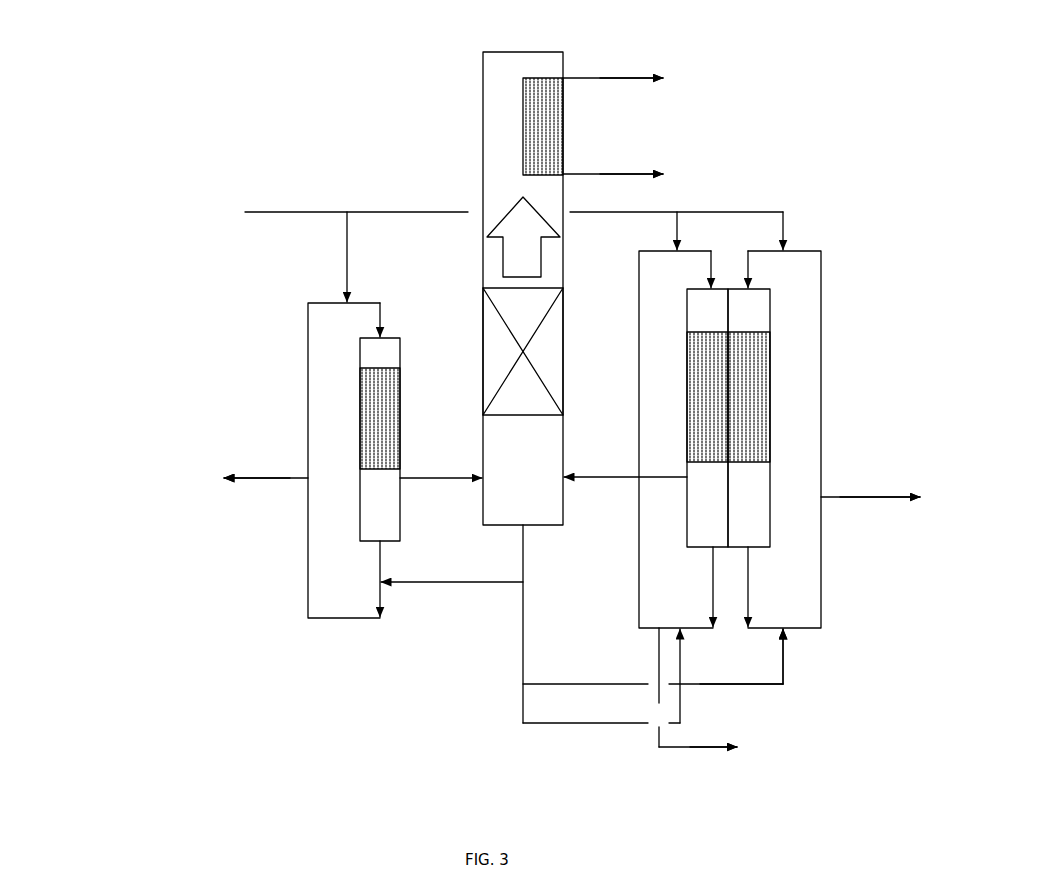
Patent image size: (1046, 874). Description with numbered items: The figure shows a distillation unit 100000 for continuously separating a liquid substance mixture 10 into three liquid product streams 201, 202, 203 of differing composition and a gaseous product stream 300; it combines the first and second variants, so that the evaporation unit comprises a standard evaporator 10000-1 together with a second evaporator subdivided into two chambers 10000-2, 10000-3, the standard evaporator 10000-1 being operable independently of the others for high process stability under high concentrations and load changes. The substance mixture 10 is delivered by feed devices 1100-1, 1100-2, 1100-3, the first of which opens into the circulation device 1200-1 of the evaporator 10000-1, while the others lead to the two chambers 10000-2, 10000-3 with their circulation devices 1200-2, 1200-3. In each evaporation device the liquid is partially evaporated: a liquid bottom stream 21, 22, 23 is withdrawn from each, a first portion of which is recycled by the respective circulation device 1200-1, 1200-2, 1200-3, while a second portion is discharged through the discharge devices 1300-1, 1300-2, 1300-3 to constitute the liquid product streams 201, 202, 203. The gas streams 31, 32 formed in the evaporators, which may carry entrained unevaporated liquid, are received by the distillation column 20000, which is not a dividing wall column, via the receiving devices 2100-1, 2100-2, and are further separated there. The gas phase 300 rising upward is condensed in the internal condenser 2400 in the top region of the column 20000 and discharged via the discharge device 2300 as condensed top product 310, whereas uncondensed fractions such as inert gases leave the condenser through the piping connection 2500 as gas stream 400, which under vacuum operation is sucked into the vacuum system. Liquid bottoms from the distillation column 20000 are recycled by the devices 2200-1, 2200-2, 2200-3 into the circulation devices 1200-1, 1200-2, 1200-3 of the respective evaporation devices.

The distillation unit 100000 is at (185, 145).
The distillation column 20000 is at (465, 95).
The gaseous product stream 300 is at (523, 237).
The internal condenser 2400 is at (543, 115).
The piping connection 2500 is at (628, 75).
The gas stream 400 is at (649, 82).
The discharge device 2300 is at (588, 168).
The condensed top product 310 is at (649, 177).
The liquid substance mixture 10 is at (499, 216).
The evaporation device 10000-1 is at (230, 283).
The feed device 1100-1 is at (343, 250).
The circulation device 1200-1 is at (305, 362).
The liquid bottom stream 21 is at (380, 439).
The gas stream 31 is at (380, 430).
The liquid product stream 201 is at (245, 483).
The discharge device 1300-1 is at (252, 482).
The device for receiving gas stream 2100-1 is at (435, 472).
The device for recycling liquid bottom stream 2200-1 is at (407, 583).
The evaporation device 10000-2 is at (697, 505).
The device for receiving gas stream 2100-2 is at (600, 472).
The device for recycling liquid bottom stream 2200-2 is at (521, 701).
The discharge device 1300-2 is at (700, 749).
The liquid product stream 202 is at (730, 748).
The evaporation device 10000-3 is at (748, 507).
The feed device 1100-2 is at (672, 232).
The feed device 1100-3 is at (790, 233).
The circulation device 1200-2 is at (639, 343).
The circulation device 1200-3 is at (822, 365).
The liquid bottom stream 22 is at (707, 458).
The liquid bottom stream 23 is at (749, 458).
The gas stream 32 is at (728, 411).
The liquid product stream 203 is at (887, 498).
The discharge device 1300-3 is at (877, 499).
The device for recycling liquid bottom stream 2200-3 is at (800, 647).